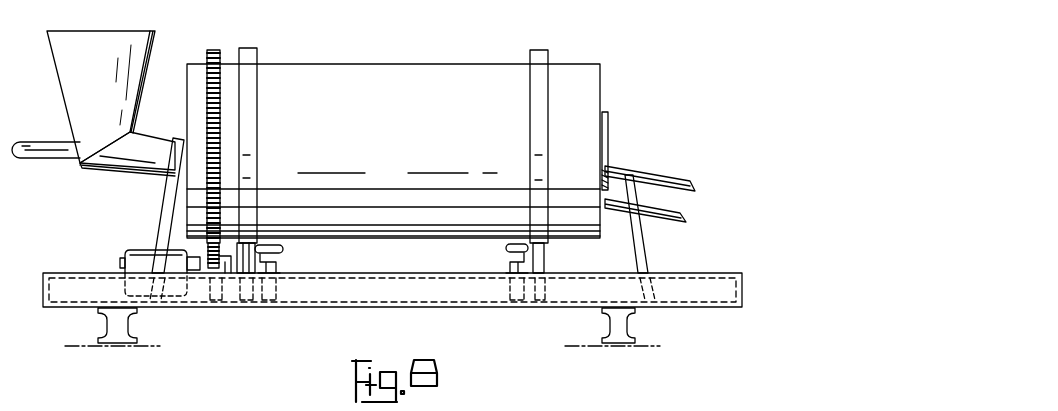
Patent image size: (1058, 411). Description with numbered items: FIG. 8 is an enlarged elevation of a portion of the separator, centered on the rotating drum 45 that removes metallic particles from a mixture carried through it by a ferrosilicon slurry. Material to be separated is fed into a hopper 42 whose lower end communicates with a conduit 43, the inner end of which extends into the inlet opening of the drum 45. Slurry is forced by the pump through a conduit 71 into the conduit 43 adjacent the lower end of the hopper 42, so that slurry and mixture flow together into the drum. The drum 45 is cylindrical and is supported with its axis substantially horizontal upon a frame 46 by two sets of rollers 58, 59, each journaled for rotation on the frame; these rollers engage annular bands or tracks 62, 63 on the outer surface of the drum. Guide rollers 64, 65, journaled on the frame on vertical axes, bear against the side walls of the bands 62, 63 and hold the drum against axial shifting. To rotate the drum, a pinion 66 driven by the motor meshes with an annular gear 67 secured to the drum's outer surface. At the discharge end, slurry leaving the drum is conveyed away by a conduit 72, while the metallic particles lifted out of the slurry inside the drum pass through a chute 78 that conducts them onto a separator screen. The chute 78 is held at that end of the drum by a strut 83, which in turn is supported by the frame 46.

The hopper 42 is at (62, 99).
The conduit 43 is at (122, 166).
The drum 45 is at (378, 64).
The frame 46 is at (480, 308).
The set of rollers 58 is at (243, 266).
The set of rollers 59 is at (548, 265).
The annular band 62 is at (257, 52).
The annular band 63 is at (550, 56).
The guide roller 64 is at (282, 248).
The guide roller 65 is at (506, 249).
The pinion 66 is at (227, 264).
The gear 67 is at (210, 50).
The conduit 71 is at (50, 158).
The conduit 72 is at (683, 215).
The chute 78 is at (670, 178).
The strut 83 is at (650, 262).